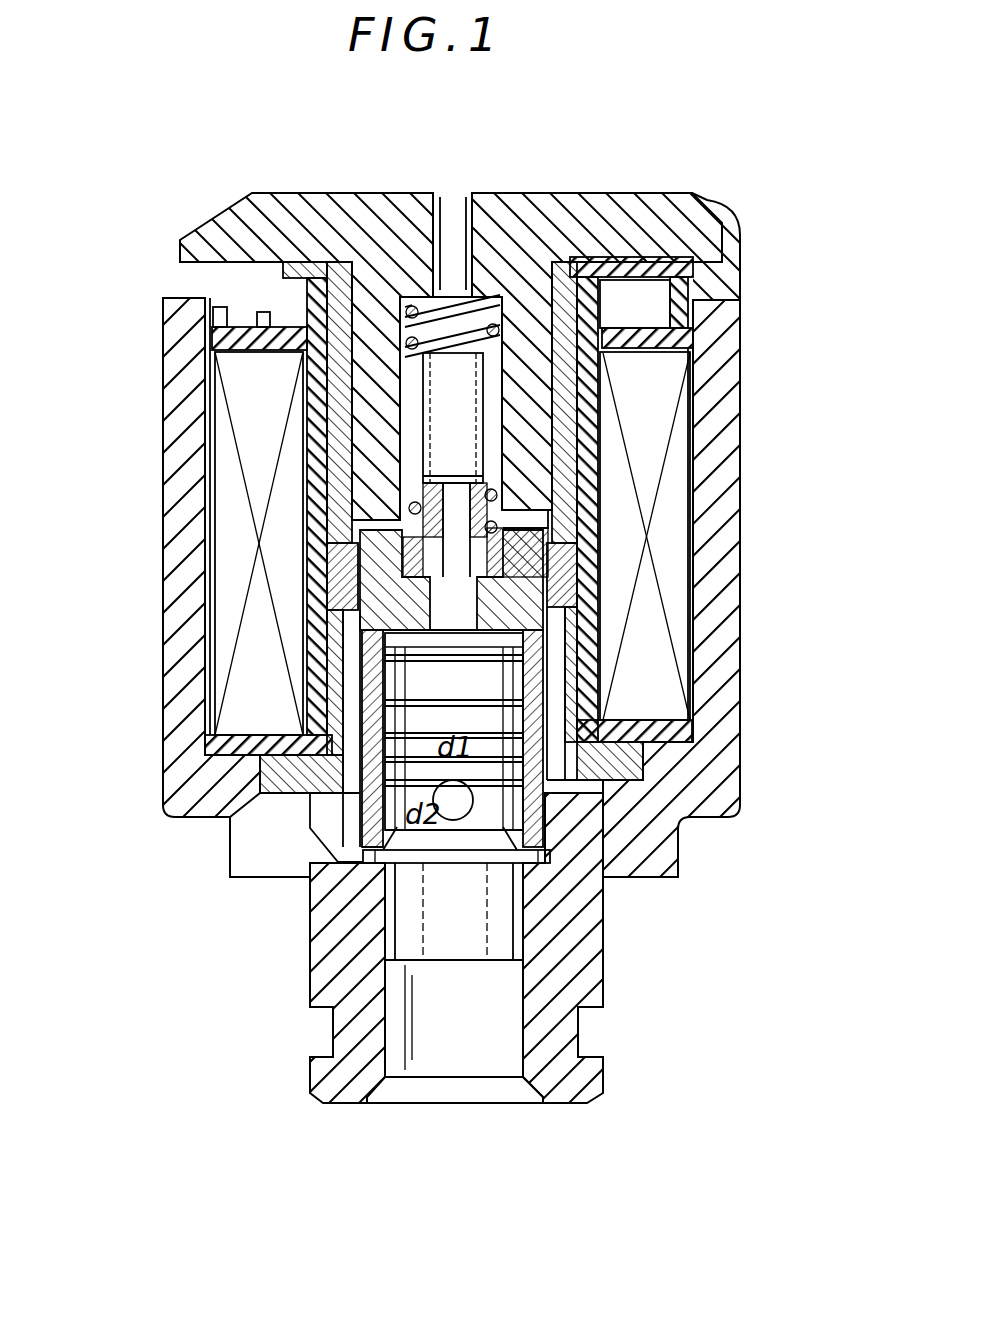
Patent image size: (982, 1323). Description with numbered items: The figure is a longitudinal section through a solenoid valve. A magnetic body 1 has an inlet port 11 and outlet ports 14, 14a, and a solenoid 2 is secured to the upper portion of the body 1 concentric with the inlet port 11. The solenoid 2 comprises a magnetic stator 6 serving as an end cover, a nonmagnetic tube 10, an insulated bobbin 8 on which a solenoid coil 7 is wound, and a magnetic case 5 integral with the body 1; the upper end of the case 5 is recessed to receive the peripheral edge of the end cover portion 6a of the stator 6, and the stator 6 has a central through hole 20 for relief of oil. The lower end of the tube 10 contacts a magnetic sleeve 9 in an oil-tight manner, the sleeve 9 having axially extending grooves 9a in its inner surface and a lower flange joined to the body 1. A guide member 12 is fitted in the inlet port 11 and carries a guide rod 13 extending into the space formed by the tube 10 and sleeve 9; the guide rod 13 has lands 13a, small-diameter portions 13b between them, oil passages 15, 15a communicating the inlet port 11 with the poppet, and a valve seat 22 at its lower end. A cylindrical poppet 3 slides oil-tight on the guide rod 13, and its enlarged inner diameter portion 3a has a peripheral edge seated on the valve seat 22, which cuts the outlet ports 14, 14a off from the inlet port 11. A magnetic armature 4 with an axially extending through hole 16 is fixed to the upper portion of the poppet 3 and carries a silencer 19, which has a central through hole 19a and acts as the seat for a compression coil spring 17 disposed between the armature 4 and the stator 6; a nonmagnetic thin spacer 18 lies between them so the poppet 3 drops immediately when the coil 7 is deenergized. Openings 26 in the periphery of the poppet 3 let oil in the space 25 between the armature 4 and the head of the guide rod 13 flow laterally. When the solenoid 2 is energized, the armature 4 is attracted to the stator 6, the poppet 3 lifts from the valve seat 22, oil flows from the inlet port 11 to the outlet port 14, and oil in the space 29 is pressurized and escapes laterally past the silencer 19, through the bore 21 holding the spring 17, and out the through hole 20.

The magnetic body 1 is at (580, 978).
The solenoid 2 is at (746, 244).
The cylindrical poppet 3 is at (545, 650).
The enlarged inner diameter portion 3a is at (330, 875).
The magnetic armature 4 is at (548, 560).
The magnetic case 5 is at (722, 490).
The magnetic stator 6 is at (383, 215).
The end cover portion 6a is at (636, 218).
The solenoid coil 7 is at (598, 457).
The insulated bobbin 8 is at (640, 347).
The magnetic sleeve 9 is at (571, 690).
The axially extending grooves 9a is at (557, 660).
The nonmagnetic tube 10 is at (577, 298).
The inlet port 11 is at (470, 1067).
The guide member 12 is at (513, 916).
The guide rod 13 is at (383, 650).
The lands 13a is at (383, 797).
The small-diameter portions 13b is at (378, 700).
The outlet port 14 is at (300, 870).
The outlet port 14a is at (333, 838).
The oil passage 15 is at (453, 948).
The oil passage 15a is at (360, 808).
The axially extending through hole 16 is at (560, 612).
The compression coil spring 17 is at (473, 395).
The nonmagnetic thin spacer 18 is at (675, 485).
The silencer 19 is at (425, 452).
The central through hole 19a is at (445, 476).
The central through hole 20 is at (457, 195).
The bore 21 is at (540, 508).
The valve seat 22 is at (538, 820).
The space 25 is at (355, 580).
The openings 26 is at (343, 625).
The space 29 is at (425, 522).